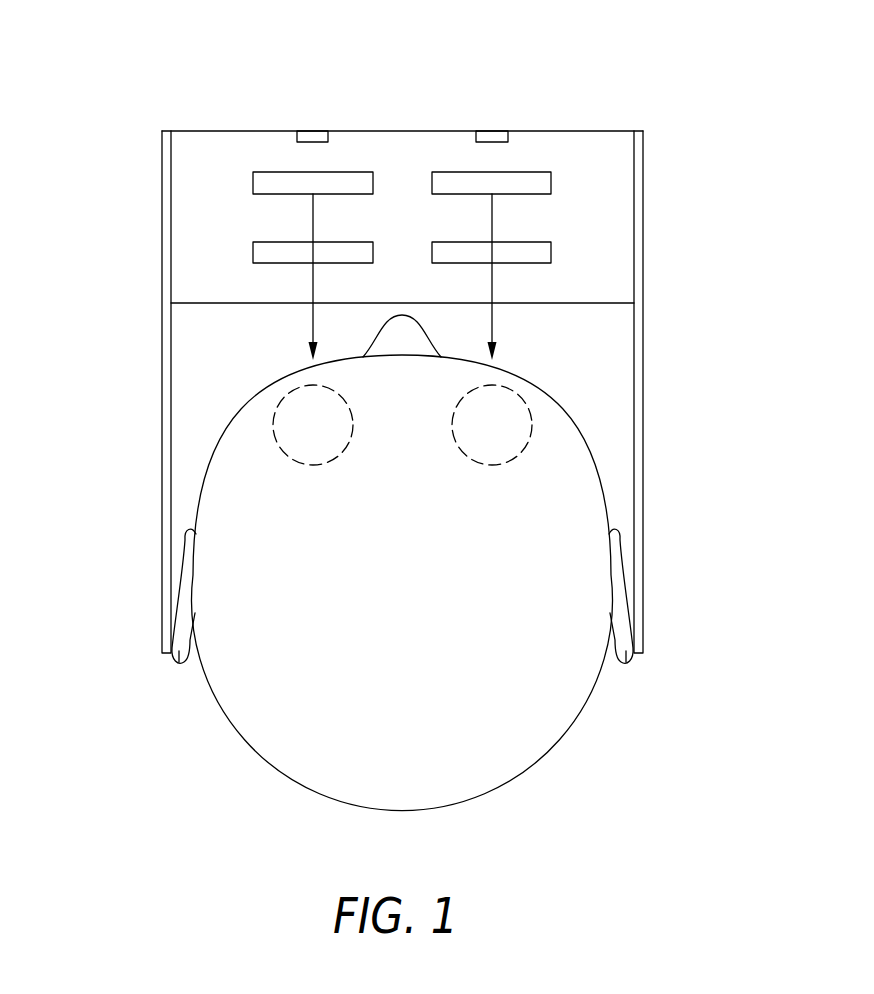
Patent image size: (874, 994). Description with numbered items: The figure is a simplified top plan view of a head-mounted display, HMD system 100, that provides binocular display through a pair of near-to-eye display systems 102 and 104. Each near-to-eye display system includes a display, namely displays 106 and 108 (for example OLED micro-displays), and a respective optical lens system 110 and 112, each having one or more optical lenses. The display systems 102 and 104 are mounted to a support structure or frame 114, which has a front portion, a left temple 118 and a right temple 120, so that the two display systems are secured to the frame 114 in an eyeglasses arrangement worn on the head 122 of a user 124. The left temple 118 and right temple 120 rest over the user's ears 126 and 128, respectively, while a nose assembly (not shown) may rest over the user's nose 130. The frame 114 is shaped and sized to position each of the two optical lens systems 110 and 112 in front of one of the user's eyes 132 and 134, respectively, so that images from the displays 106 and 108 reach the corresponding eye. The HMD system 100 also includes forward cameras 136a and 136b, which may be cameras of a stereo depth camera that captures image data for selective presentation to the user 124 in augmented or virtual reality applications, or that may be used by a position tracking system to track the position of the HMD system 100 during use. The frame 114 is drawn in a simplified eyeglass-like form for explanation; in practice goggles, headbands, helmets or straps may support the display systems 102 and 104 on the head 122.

The HMD system 100 is at (740, 108).
The near-to-eye display system 102 is at (237, 202).
The near-to-eye display system 104 is at (570, 200).
The display 106 is at (350, 172).
The display 108 is at (535, 172).
The optical lens system 110 is at (253, 253).
The optical lens system 112 is at (552, 253).
The frame 114 is at (167, 129).
The left temple 118 is at (162, 517).
The right temple 120 is at (643, 503).
The head 122 is at (477, 797).
The user 124 is at (600, 748).
The ear 126 is at (181, 661).
The ear 128 is at (624, 661).
The nose 130 is at (428, 328).
The eye 132 is at (273, 435).
The eye 134 is at (528, 442).
The forward camera 136a is at (307, 138).
The forward camera 136b is at (487, 138).